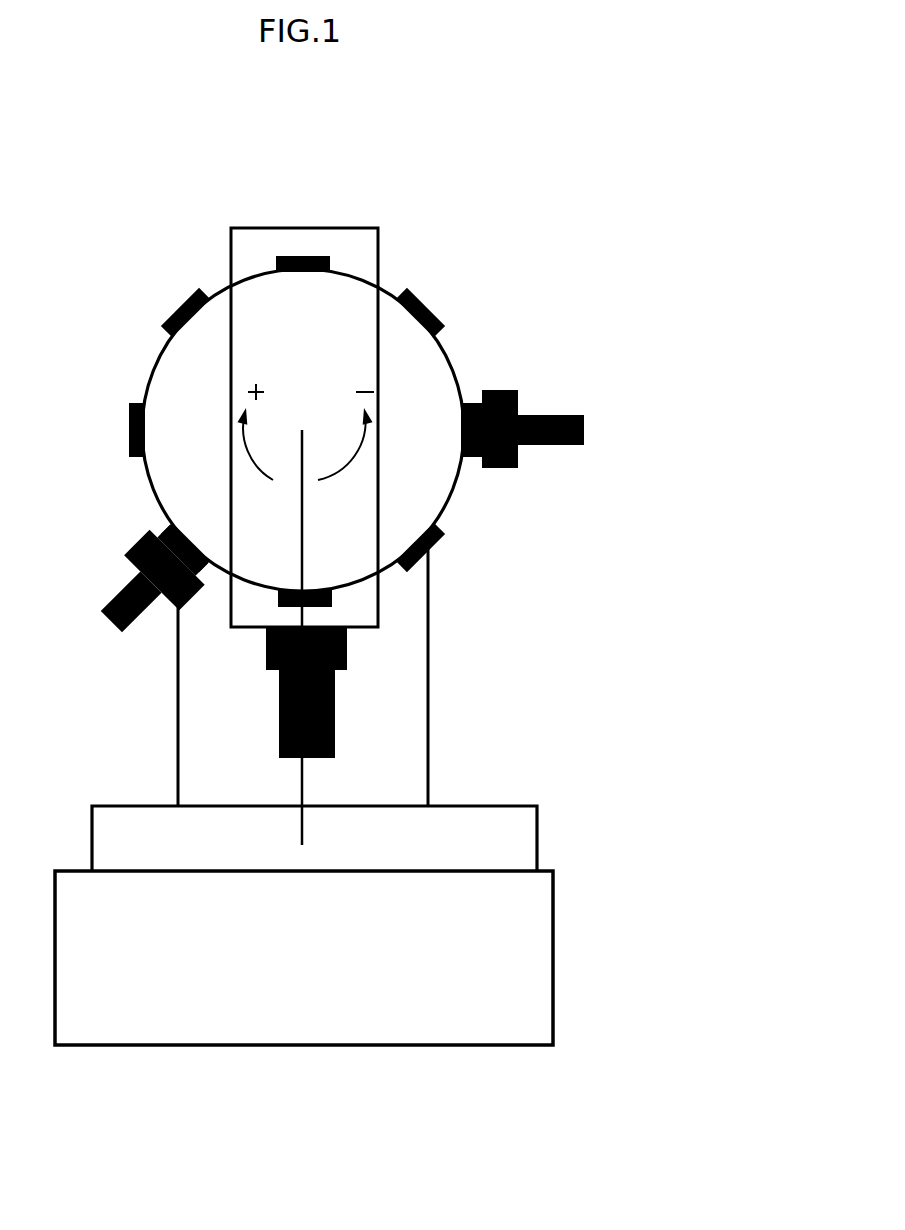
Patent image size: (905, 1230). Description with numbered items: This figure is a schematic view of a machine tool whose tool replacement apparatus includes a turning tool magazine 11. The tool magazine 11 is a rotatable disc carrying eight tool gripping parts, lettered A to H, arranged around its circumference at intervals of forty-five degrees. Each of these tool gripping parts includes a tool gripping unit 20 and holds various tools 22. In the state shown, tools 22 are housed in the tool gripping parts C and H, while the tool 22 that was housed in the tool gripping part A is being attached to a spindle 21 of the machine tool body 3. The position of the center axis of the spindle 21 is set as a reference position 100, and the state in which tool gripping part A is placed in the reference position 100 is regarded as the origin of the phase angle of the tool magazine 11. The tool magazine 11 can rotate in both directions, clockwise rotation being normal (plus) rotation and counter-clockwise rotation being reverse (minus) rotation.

The machine tool body 3 is at (556, 285).
The tool magazine 11 is at (333, 303).
The tool gripping unit 20 is at (186, 300).
The spindle 21 is at (360, 610).
The tool 22 is at (557, 417).
The reference position 100 is at (303, 777).